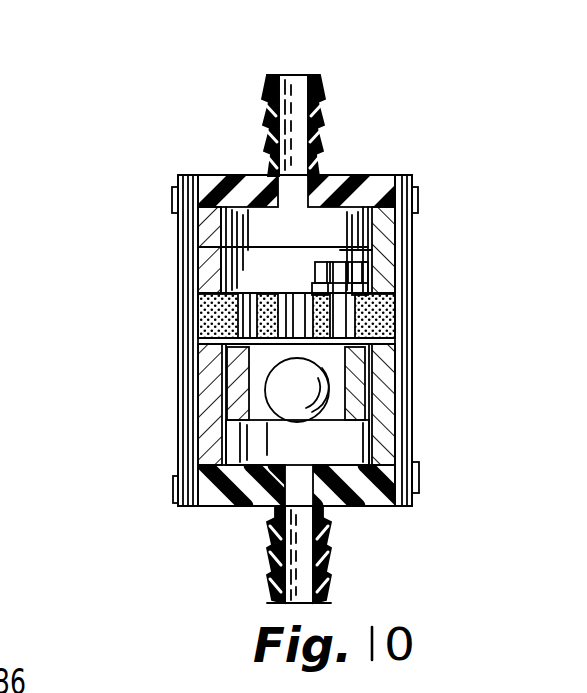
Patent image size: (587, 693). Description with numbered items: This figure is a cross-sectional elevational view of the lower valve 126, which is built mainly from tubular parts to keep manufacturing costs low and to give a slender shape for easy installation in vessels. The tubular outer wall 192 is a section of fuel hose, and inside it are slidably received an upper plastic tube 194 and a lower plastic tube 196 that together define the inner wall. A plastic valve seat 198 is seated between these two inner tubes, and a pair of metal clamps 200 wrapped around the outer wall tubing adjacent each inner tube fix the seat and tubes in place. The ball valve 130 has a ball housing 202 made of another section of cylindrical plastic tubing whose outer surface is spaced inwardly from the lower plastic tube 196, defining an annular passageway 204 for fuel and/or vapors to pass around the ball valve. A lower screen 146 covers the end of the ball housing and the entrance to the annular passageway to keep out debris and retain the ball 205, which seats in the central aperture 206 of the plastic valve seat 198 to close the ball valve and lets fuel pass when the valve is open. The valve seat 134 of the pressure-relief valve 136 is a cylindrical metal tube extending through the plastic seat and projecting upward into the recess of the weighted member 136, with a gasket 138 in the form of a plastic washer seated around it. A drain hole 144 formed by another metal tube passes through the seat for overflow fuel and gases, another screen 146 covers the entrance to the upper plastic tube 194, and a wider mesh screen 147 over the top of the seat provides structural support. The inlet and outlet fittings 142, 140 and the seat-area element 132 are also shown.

The lower valve 126 is at (196, 106).
The ball valve 130 is at (295, 448).
The valve seat 132 is at (301, 252).
The valve seat for the pressure-relief valve 134 is at (352, 302).
The pressure-relief valve weighted member 136 is at (330, 258).
The gasket 138 is at (380, 288).
The outlet tube 140 is at (290, 550).
The inlet tube 142 is at (290, 78).
The drain hole 144 is at (203, 243).
The screen 146 is at (312, 250).
The wider mesh screen 147 is at (302, 250).
The tubular outer wall 192 is at (385, 278).
The upper plastic tube 194 is at (408, 205).
The lower plastic tube 196 is at (383, 449).
The plastic valve seat 198 is at (200, 313).
The metal clamps 200 is at (172, 205).
The ball housing 202 is at (245, 399).
The annular passageway 204 is at (375, 412).
The ball 205 is at (255, 426).
The central aperture 206 is at (205, 364).